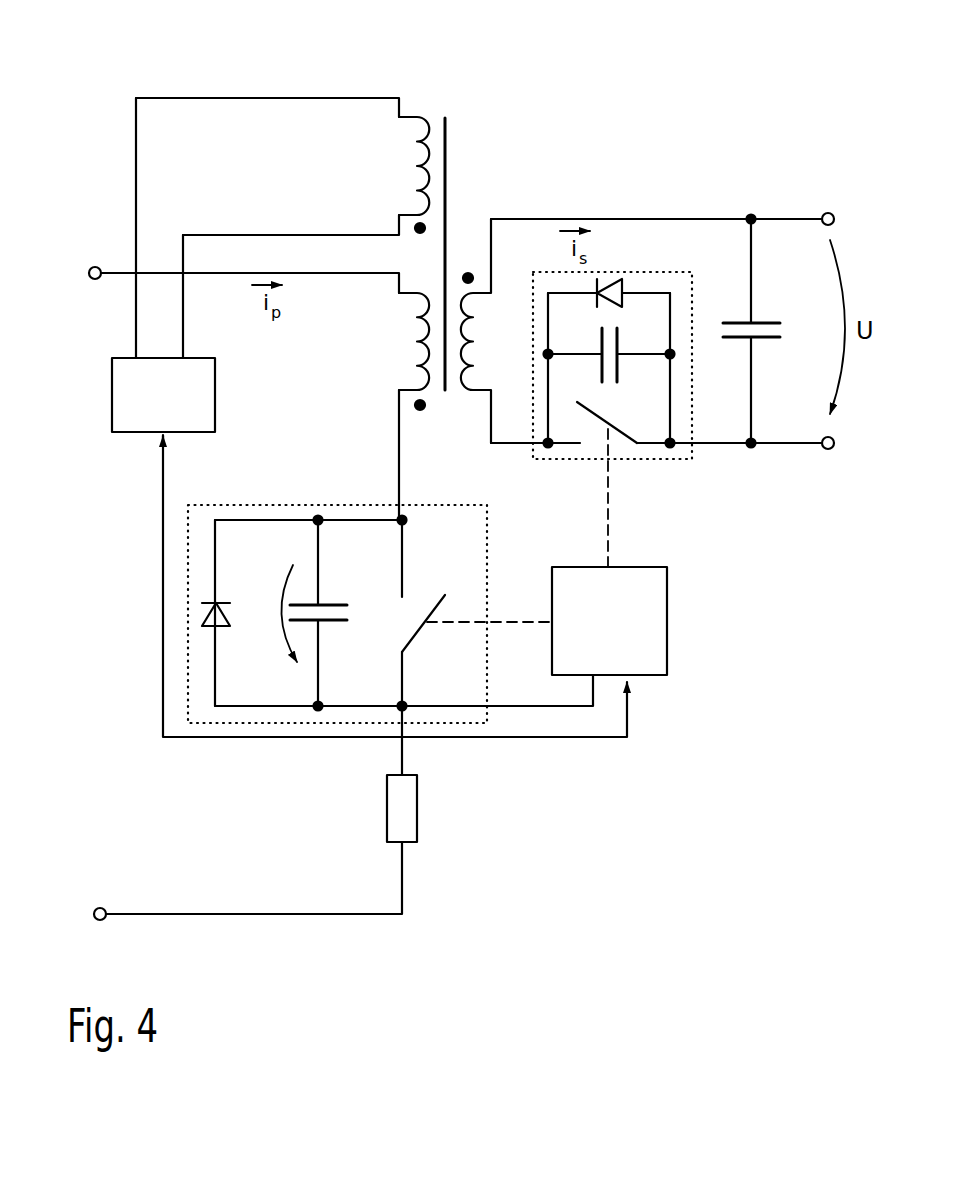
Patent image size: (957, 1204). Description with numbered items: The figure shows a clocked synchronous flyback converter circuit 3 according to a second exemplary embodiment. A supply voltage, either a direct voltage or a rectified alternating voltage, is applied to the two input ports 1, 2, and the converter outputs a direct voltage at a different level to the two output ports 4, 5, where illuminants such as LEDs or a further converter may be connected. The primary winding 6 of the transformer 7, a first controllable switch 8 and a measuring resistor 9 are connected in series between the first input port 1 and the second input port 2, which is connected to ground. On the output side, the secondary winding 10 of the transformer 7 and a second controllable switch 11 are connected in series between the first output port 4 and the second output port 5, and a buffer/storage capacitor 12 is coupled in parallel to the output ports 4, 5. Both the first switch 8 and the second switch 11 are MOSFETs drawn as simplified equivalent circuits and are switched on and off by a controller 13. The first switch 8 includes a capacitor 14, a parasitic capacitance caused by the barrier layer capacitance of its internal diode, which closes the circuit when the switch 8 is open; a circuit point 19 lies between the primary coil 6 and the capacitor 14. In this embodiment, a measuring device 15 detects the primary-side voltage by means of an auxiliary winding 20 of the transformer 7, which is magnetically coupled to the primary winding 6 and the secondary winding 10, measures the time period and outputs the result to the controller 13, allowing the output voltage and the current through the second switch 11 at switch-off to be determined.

The first input port 1 is at (88, 274).
The second input port 2 is at (94, 914).
The flyback converter circuit 3 is at (590, 806).
The first output port 4 is at (831, 212).
The second output port 5 is at (829, 450).
The primary winding 6 is at (410, 342).
The transformer 7 is at (448, 233).
The first controllable switch 8 is at (370, 596).
The measuring resistor 9 is at (387, 808).
The secondary winding 10 is at (490, 341).
The second controllable switch 11 is at (660, 462).
The buffer/storage capacitor 12 is at (758, 321).
The controller 13 is at (668, 617).
The capacitor 14 is at (332, 601).
The measuring device 15 is at (216, 393).
The circuit point 19 is at (318, 516).
The auxiliary winding 20 is at (410, 167).